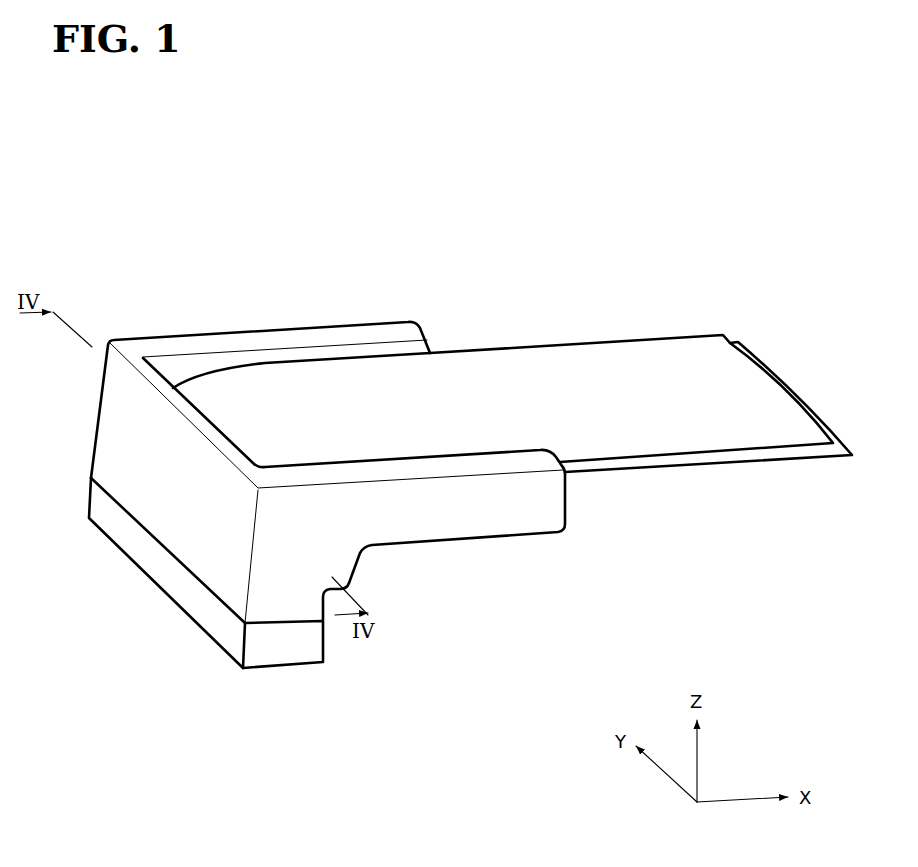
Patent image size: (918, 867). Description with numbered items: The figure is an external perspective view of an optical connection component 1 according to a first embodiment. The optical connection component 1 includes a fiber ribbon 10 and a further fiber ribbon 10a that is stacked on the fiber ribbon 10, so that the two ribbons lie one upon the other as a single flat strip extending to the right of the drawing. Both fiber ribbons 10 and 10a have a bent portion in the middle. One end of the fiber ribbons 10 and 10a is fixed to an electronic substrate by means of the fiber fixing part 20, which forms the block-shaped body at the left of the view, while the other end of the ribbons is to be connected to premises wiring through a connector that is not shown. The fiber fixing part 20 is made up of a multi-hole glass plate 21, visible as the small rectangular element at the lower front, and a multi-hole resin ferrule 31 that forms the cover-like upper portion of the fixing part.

The optical connection component 1 is at (181, 246).
The fiber ribbon 10 is at (625, 336).
The fiber ribbon 10a is at (729, 471).
The fiber fixing part 20 is at (140, 600).
The multi-hole glass plate 21 is at (287, 671).
The multi-hole resin ferrule 31 is at (111, 414).